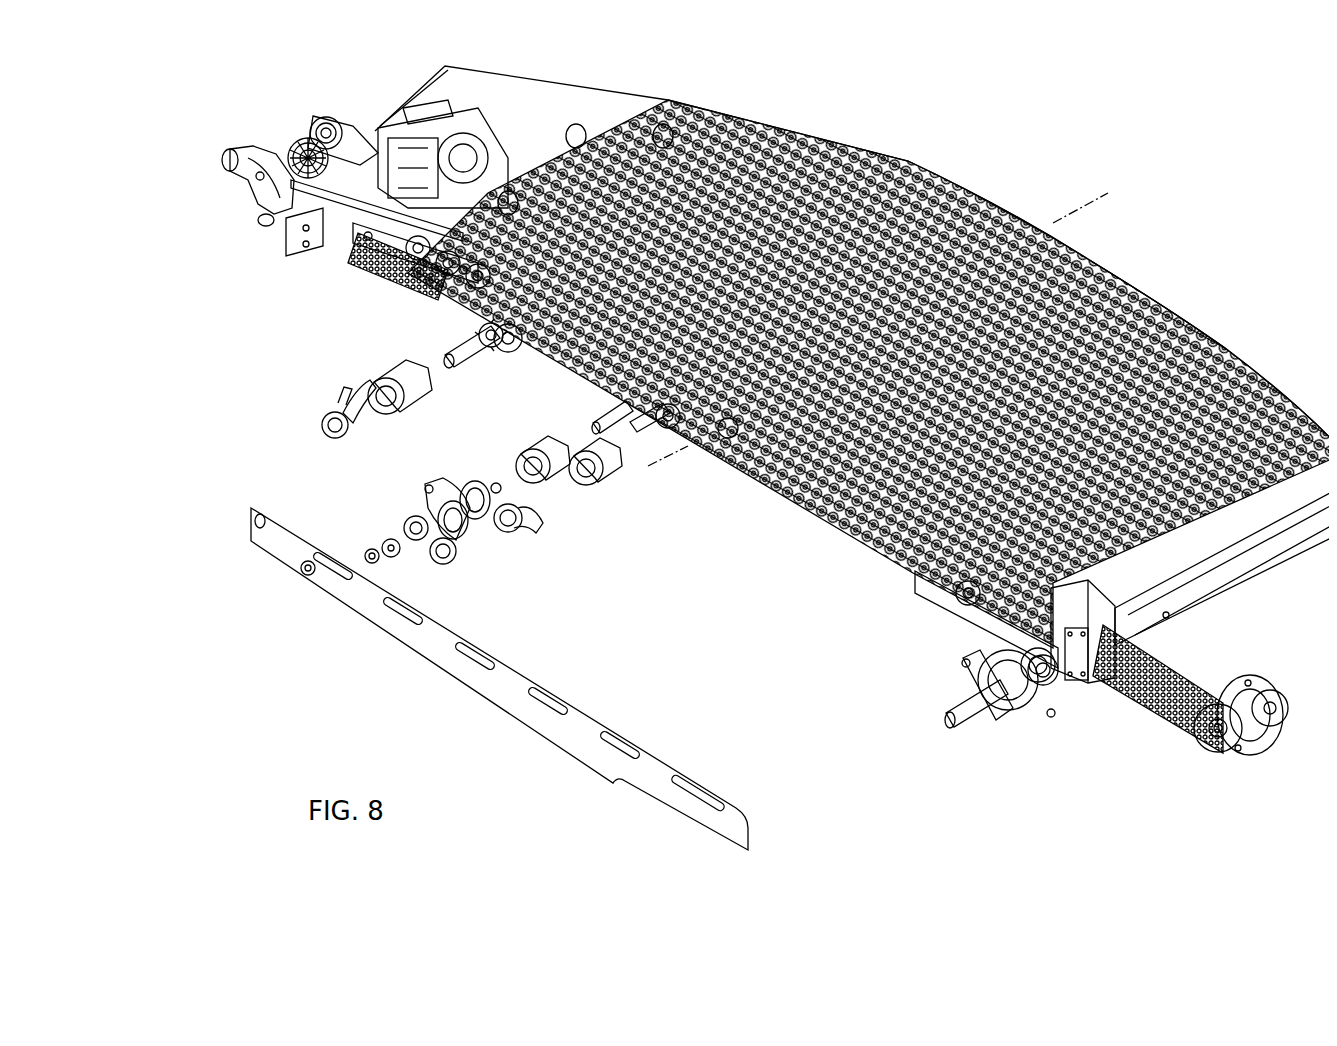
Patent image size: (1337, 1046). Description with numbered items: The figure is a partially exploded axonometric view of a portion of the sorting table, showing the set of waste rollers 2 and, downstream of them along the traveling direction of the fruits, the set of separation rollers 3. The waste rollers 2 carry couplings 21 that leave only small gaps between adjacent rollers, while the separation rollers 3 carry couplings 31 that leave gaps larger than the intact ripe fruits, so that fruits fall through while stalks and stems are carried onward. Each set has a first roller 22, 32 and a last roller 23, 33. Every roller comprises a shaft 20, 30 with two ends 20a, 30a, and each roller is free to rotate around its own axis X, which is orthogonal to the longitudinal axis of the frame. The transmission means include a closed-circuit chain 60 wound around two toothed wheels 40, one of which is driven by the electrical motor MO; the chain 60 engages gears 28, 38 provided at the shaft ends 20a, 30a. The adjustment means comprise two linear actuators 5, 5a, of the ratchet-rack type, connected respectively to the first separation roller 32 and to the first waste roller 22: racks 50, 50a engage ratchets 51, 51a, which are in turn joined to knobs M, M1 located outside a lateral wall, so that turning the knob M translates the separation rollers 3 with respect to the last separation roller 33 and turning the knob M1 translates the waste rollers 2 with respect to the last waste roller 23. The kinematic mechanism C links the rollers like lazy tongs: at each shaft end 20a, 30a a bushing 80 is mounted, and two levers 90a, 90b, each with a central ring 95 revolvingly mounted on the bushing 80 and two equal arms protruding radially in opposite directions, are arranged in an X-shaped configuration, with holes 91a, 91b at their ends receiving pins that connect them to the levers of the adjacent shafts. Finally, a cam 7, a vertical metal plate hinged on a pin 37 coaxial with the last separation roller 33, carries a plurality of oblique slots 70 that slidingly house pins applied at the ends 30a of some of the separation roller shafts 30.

The waste rollers 2 is at (812, 125).
The separation rollers 3 is at (1085, 245).
The linear actuator 5 is at (1067, 682).
The linear actuator 5a is at (300, 213).
The cam 7 is at (499, 692).
The shaft 20 is at (480, 165).
The end of shaft 20a is at (432, 342).
The couplings 21 is at (503, 188).
The first waste roller 22 is at (400, 260).
The last waste roller 23 is at (572, 120).
The gears 28 is at (486, 342).
The shaft 30 is at (1162, 607).
The end of shaft 30a is at (590, 414).
The couplings 31 is at (722, 432).
The first separation roller 32 is at (1000, 630).
The last separation roller 33 is at (660, 120).
The pin 37 is at (300, 567).
The gears 38 is at (665, 422).
The toothed wheels 40 is at (345, 238).
The rack 50 is at (950, 590).
The rack 50a is at (330, 118).
The ratchet 51 is at (1043, 690).
The ratchet 51a is at (300, 135).
The chain 60 is at (1220, 665).
The slots 70 is at (520, 675).
The bushing 80 is at (400, 406).
The lever 90a is at (525, 522).
The lever 90b is at (455, 532).
The holes 91a is at (328, 375).
The holes 91b is at (314, 430).
The central ring 95 is at (352, 373).
The kinematic mechanism C is at (265, 455).
The knob M is at (955, 718).
The knob M1 is at (235, 190).
The electrical motor MO is at (432, 125).
The axis X is at (879, 330).